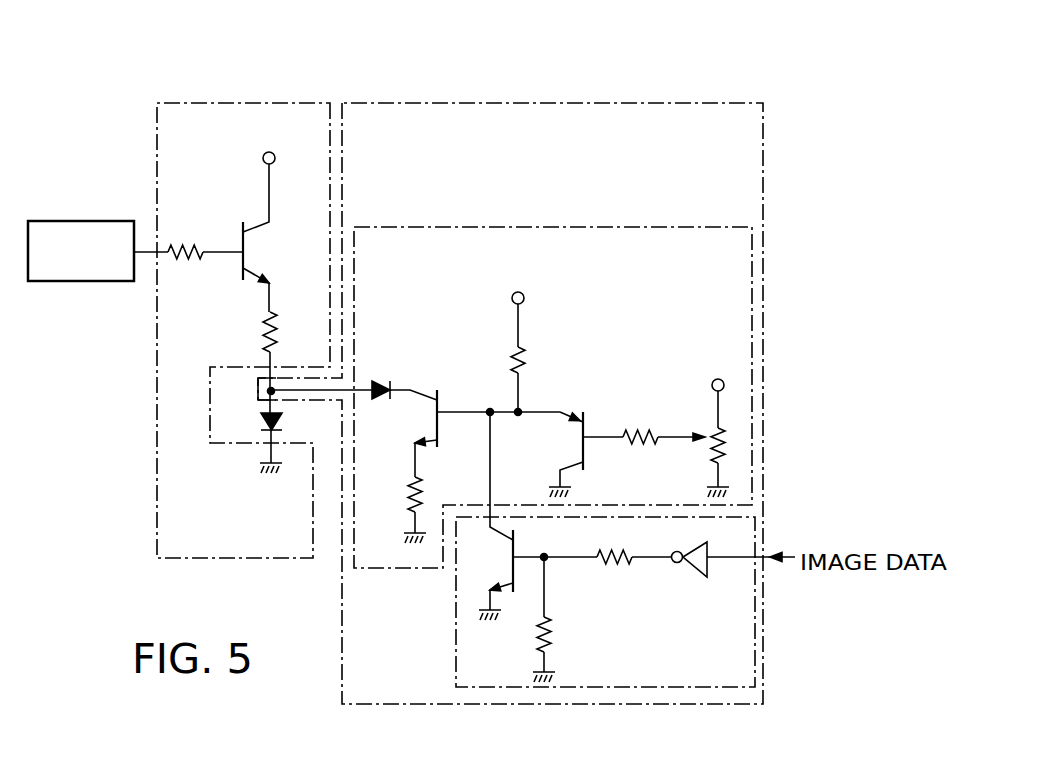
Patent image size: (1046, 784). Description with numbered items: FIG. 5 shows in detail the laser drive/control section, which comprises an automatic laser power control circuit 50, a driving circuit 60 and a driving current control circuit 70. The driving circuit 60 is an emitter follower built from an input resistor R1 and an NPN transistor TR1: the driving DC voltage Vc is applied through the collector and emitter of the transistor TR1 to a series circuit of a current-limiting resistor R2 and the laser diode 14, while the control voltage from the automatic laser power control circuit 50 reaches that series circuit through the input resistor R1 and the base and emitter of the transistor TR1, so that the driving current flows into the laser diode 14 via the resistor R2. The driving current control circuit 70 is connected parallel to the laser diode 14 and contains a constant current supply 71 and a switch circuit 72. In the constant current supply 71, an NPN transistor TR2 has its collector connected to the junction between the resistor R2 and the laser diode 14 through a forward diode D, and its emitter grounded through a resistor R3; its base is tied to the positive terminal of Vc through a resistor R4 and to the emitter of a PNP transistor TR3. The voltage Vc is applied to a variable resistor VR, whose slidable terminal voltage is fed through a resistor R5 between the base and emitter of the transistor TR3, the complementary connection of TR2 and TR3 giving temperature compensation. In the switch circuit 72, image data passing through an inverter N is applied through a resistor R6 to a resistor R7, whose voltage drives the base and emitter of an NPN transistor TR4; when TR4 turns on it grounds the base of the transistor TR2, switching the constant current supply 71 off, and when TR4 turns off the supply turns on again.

The automatic laser power control (ALPC) circuit 50 is at (78, 221).
The driving circuit 60 is at (240, 100).
The driving current control circuit 70 is at (522, 100).
The constant current supply 71 is at (466, 224).
The switch circuit 72 is at (455, 672).
The laser diode 14 is at (263, 424).
The input resistor R1 is at (179, 240).
The current-limiting resistor R2 is at (258, 332).
The resistor R3 is at (412, 478).
The resistor R4 is at (525, 350).
The resistor R5 is at (645, 426).
The resistor R6 is at (614, 565).
The resistor R7 is at (555, 636).
The NPN transistor TR1 is at (255, 226).
The NPN transistor TR2 is at (432, 390).
The PNP transistor TR3 is at (565, 412).
The NPN transistor TR4 is at (511, 592).
The forward diode D is at (380, 378).
The variable resistor VR is at (704, 444).
The inverter N is at (692, 578).